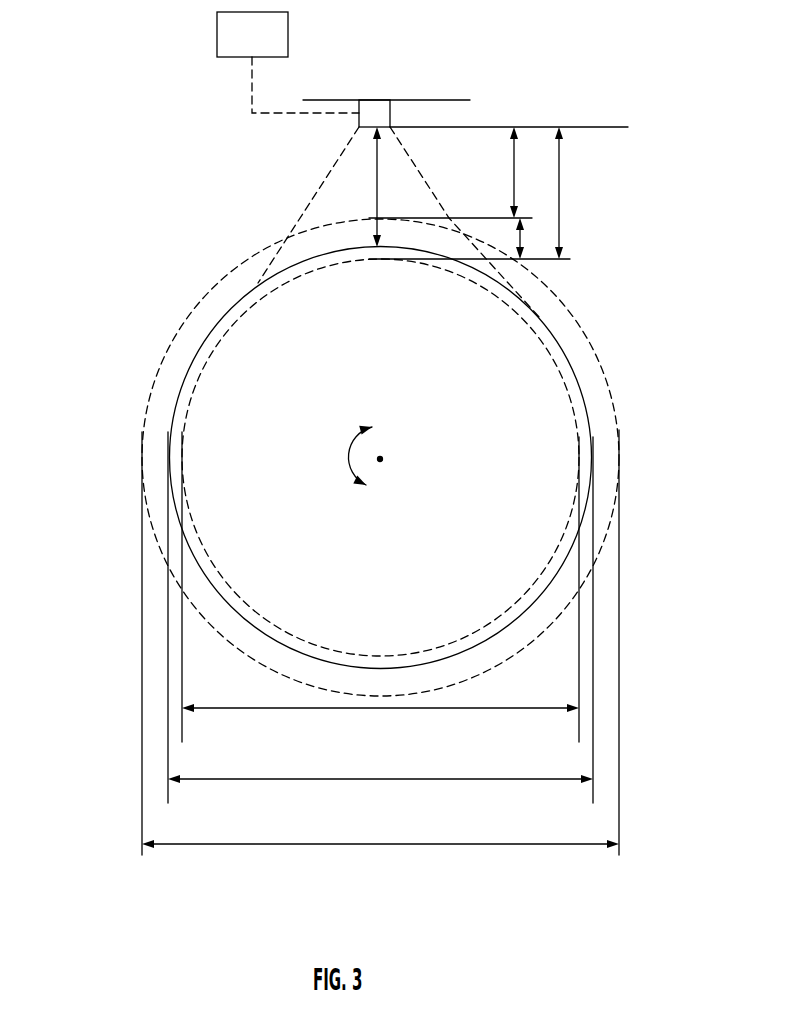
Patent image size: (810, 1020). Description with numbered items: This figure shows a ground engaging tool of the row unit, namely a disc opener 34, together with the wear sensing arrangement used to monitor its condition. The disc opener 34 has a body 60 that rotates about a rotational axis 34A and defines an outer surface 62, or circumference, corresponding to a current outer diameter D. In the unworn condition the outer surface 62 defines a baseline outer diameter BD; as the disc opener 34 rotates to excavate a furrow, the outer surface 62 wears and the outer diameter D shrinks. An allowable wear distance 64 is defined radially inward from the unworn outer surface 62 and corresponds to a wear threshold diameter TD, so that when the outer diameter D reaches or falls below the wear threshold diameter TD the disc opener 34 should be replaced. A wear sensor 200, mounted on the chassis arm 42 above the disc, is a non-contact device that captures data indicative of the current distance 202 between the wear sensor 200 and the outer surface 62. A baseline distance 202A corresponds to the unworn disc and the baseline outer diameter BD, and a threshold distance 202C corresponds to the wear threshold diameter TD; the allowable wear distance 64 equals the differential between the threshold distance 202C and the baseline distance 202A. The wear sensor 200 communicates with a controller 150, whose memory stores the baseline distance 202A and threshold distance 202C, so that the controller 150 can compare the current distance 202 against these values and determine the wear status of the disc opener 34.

The controller 150 is at (217, 42).
The wear sensor 200 is at (377, 110).
The chassis arm 42 is at (450, 100).
The current distance 202 is at (375, 168).
The baseline distance 202A is at (514, 186).
The threshold distance 202C is at (560, 184).
The allowable wear distance 64 is at (520, 238).
The disc opener 34 is at (136, 214).
The rotational axis 34A is at (383, 459).
The body 60 is at (247, 367).
The outer surface 62 is at (168, 432).
The wear threshold diameter TD is at (360, 708).
The outer diameter D is at (325, 779).
The baseline outer diameter BD is at (272, 844).